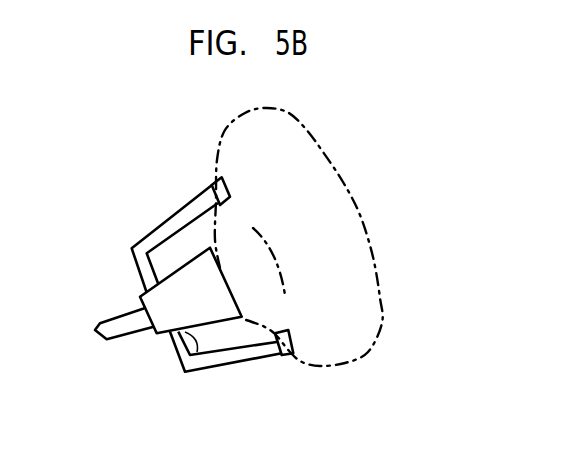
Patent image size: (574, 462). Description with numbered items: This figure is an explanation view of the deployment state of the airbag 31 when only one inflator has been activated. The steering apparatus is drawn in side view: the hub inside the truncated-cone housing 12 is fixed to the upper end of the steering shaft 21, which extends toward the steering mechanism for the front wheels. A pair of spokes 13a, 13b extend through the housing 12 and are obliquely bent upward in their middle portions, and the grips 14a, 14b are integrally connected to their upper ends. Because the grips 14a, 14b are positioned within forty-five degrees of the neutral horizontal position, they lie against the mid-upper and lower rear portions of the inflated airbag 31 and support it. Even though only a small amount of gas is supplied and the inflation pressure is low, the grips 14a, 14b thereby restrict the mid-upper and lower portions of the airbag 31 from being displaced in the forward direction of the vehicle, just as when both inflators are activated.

The housing 12 is at (177, 355).
The spoke 13a is at (218, 370).
The spoke 13b is at (160, 223).
The grip 14a is at (287, 357).
The grip 14b is at (216, 178).
The steering shaft 21 is at (115, 342).
The airbag 31 is at (341, 178).